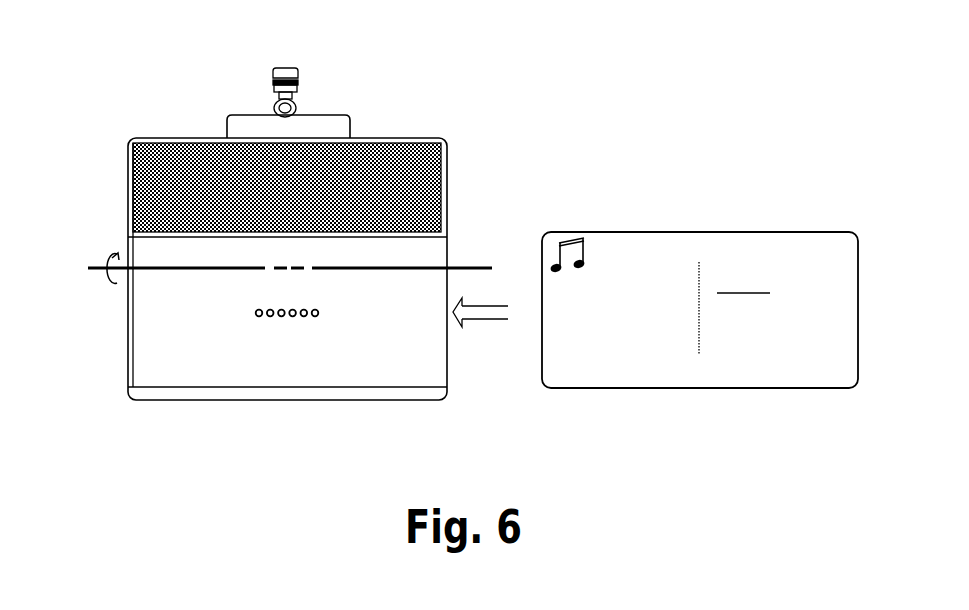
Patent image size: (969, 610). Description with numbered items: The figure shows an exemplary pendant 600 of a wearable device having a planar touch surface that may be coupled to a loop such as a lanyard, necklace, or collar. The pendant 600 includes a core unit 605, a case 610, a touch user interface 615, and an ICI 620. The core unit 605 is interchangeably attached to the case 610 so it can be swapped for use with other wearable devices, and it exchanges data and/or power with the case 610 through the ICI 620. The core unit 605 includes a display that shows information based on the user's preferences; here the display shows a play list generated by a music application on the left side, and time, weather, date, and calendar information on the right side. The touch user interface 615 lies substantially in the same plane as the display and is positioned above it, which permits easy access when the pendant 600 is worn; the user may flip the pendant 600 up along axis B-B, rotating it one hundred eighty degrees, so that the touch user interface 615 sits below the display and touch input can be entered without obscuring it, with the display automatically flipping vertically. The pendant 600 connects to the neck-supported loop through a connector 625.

The pendant 600 is at (86, 55).
The core unit 605 is at (676, 229).
The case 610 is at (405, 136).
The touch user interface 615 is at (432, 185).
The ICI 620 is at (319, 319).
The connector 625 is at (290, 73).